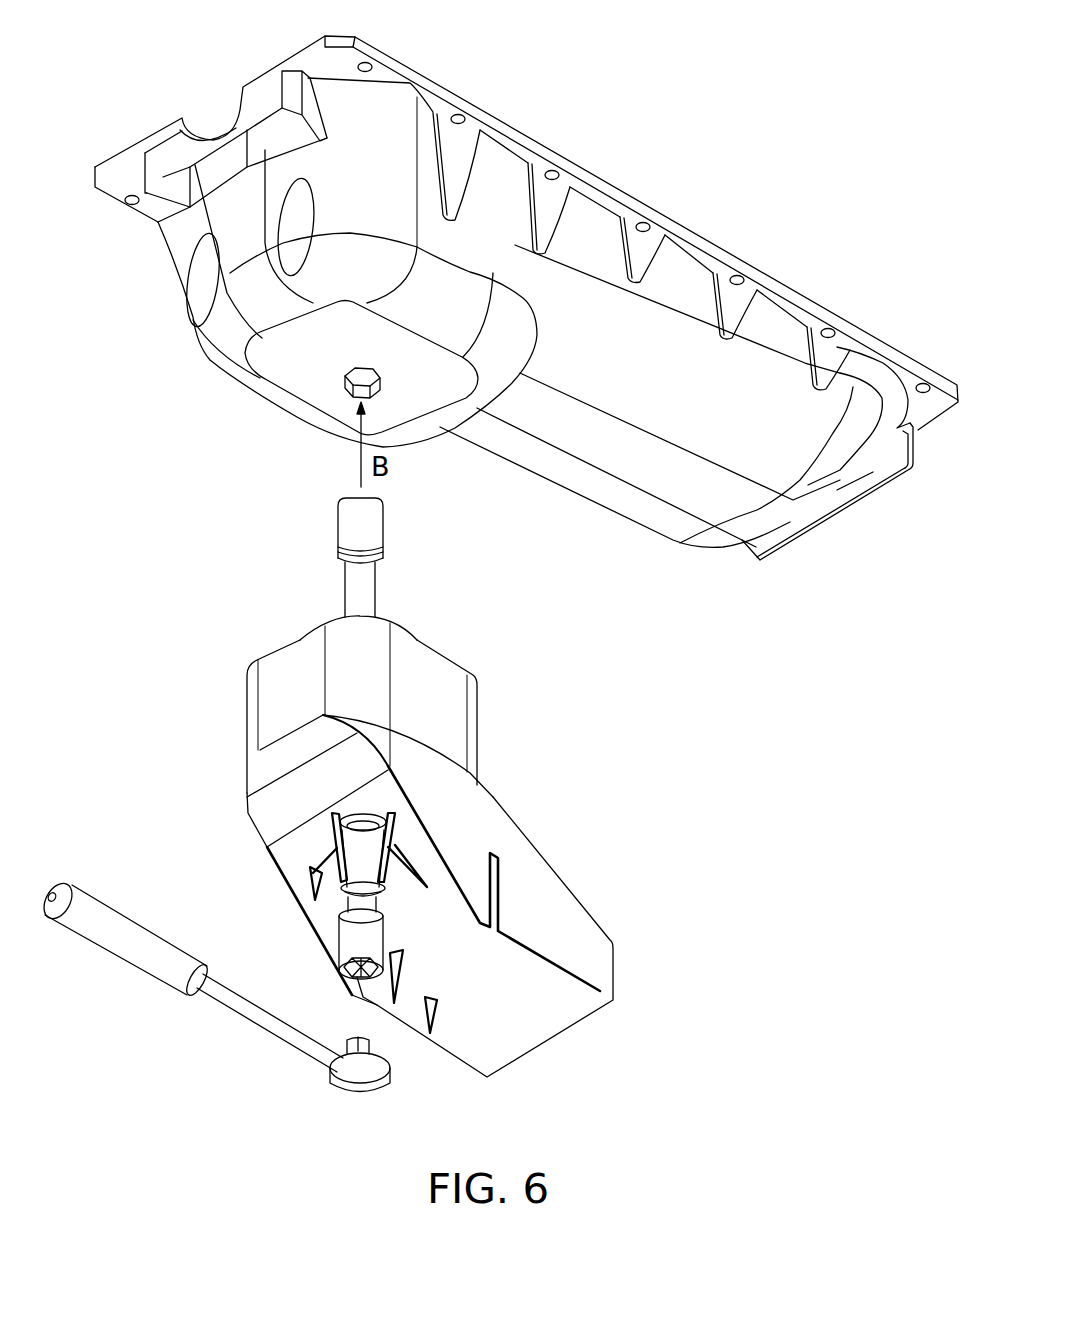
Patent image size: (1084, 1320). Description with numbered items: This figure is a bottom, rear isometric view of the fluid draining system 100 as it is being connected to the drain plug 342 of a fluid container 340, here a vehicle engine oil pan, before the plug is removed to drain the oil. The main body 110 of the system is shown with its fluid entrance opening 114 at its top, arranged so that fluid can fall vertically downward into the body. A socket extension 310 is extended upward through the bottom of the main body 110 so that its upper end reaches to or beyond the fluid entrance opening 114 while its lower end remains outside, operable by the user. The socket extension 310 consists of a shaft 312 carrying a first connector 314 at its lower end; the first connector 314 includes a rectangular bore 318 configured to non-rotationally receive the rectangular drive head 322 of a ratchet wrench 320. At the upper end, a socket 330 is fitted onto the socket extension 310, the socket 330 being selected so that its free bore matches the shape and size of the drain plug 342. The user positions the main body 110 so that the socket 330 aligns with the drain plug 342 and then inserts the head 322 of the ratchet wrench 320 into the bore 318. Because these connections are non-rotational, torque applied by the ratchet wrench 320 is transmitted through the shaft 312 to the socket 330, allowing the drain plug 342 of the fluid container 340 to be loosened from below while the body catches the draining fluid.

The fluid draining system 100 is at (455, 843).
The main body 110 is at (557, 842).
The fluid entrance opening 114 is at (457, 646).
The socket extension 310 is at (326, 605).
The shaft 312 is at (357, 902).
The first connector 314 is at (357, 940).
The bore 318 is at (348, 978).
The ratchet wrench 320 is at (253, 994).
The head 322 is at (373, 1037).
The socket 330 is at (352, 527).
The fluid container 340 is at (183, 286).
The drain plug 342 is at (345, 392).